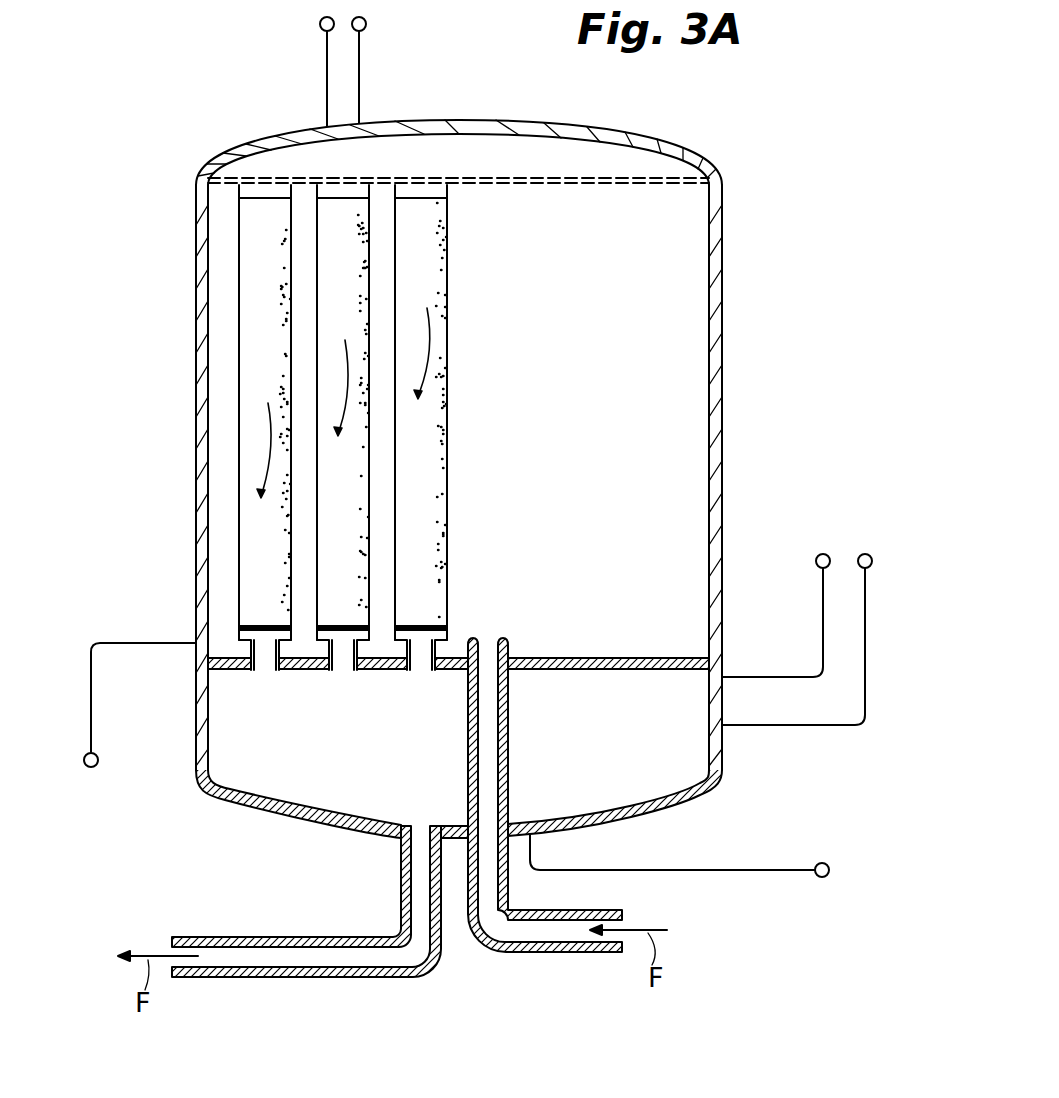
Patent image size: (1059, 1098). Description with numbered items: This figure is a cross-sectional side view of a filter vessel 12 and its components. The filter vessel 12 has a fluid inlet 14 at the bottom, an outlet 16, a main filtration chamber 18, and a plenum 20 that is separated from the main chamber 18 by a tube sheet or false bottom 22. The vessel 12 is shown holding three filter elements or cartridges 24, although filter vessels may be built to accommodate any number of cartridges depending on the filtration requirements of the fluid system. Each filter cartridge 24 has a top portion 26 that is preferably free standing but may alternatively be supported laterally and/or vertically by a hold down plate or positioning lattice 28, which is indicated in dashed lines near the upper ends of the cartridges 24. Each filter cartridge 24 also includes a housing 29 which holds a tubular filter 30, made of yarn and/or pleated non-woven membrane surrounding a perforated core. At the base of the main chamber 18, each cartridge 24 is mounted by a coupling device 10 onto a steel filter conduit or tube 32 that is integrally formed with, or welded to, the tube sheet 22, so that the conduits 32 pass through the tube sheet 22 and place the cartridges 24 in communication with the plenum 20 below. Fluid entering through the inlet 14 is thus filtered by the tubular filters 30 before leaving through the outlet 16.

The coupling device 10 is at (232, 636).
The filter vessel 12 is at (723, 240).
The fluid inlet 14 is at (548, 945).
The outlet 16 is at (258, 962).
The main filtration chamber 18 is at (688, 518).
The plenum 20 is at (318, 825).
The tube sheet 22 is at (618, 672).
The filter cartridge 24 is at (232, 262).
The top portion 26 is at (342, 184).
The hold down plate 28 is at (596, 185).
The housing 29 is at (370, 445).
The tubular filter 30 is at (257, 533).
The filter conduit 32 is at (265, 672).